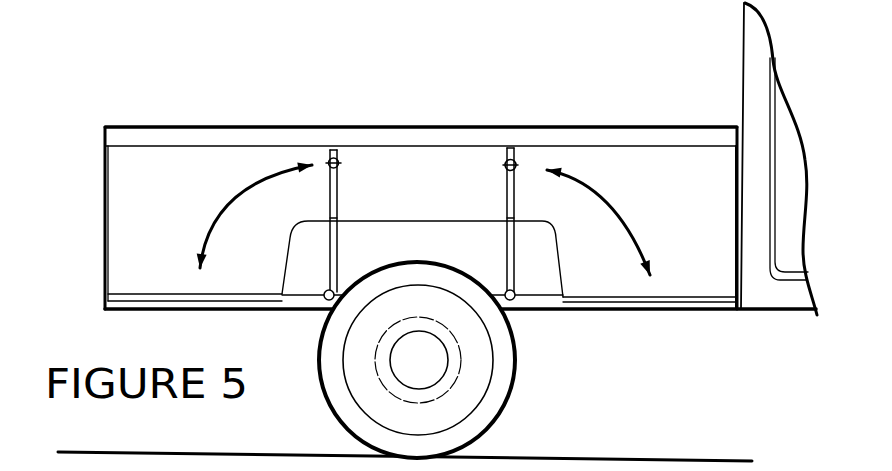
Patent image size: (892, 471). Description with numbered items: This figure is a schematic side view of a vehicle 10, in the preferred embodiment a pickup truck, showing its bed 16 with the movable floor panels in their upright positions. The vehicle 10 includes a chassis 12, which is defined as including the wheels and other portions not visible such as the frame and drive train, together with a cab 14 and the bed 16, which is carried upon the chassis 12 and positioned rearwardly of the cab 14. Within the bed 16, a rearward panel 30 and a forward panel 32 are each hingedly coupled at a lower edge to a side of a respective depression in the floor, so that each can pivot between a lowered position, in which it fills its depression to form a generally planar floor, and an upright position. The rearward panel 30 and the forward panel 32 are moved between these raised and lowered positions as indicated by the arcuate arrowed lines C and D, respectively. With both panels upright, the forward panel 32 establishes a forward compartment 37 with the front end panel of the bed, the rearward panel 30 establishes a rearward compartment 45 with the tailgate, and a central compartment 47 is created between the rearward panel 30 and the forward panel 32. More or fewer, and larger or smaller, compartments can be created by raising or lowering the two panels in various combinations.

The vehicle 10 is at (122, 99).
The chassis 12 is at (528, 362).
The cab 14 is at (784, 296).
The bed 16 is at (280, 118).
The rearward panel 30 is at (336, 188).
The forward panel 32 is at (515, 177).
The forward compartment 37 is at (652, 160).
The rearward compartment 45 is at (183, 182).
The central compartment 47 is at (433, 187).
The arcuate arrowed line C is at (232, 202).
The arcuate arrowed line D is at (627, 206).